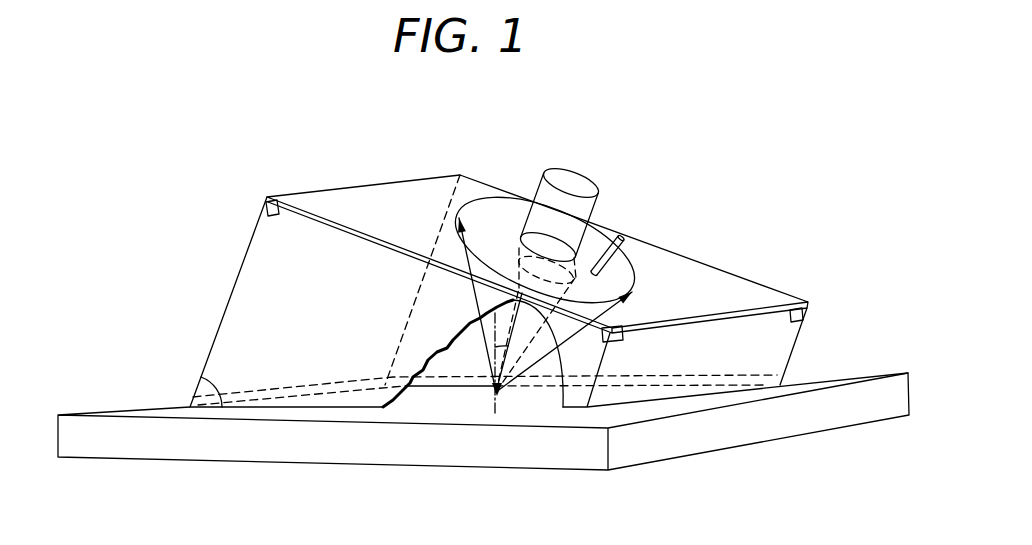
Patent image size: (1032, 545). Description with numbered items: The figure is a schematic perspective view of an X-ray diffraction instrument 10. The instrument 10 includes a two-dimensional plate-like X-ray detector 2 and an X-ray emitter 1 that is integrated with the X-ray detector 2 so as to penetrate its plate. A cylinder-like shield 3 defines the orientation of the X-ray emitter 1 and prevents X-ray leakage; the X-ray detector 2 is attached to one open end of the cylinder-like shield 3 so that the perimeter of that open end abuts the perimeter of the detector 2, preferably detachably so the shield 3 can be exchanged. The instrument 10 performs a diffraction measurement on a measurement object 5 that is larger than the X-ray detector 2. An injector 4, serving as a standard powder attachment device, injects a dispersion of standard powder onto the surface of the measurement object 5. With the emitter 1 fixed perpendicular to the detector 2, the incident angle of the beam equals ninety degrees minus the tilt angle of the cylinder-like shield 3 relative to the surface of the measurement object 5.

The X-ray emitter 1 is at (573, 178).
The X-ray detector 2 is at (351, 212).
The cylinder-like shield 3 is at (240, 295).
The injector 4 is at (615, 252).
The measurement object 5 is at (520, 462).
The X-ray diffraction instrument 10 is at (683, 180).